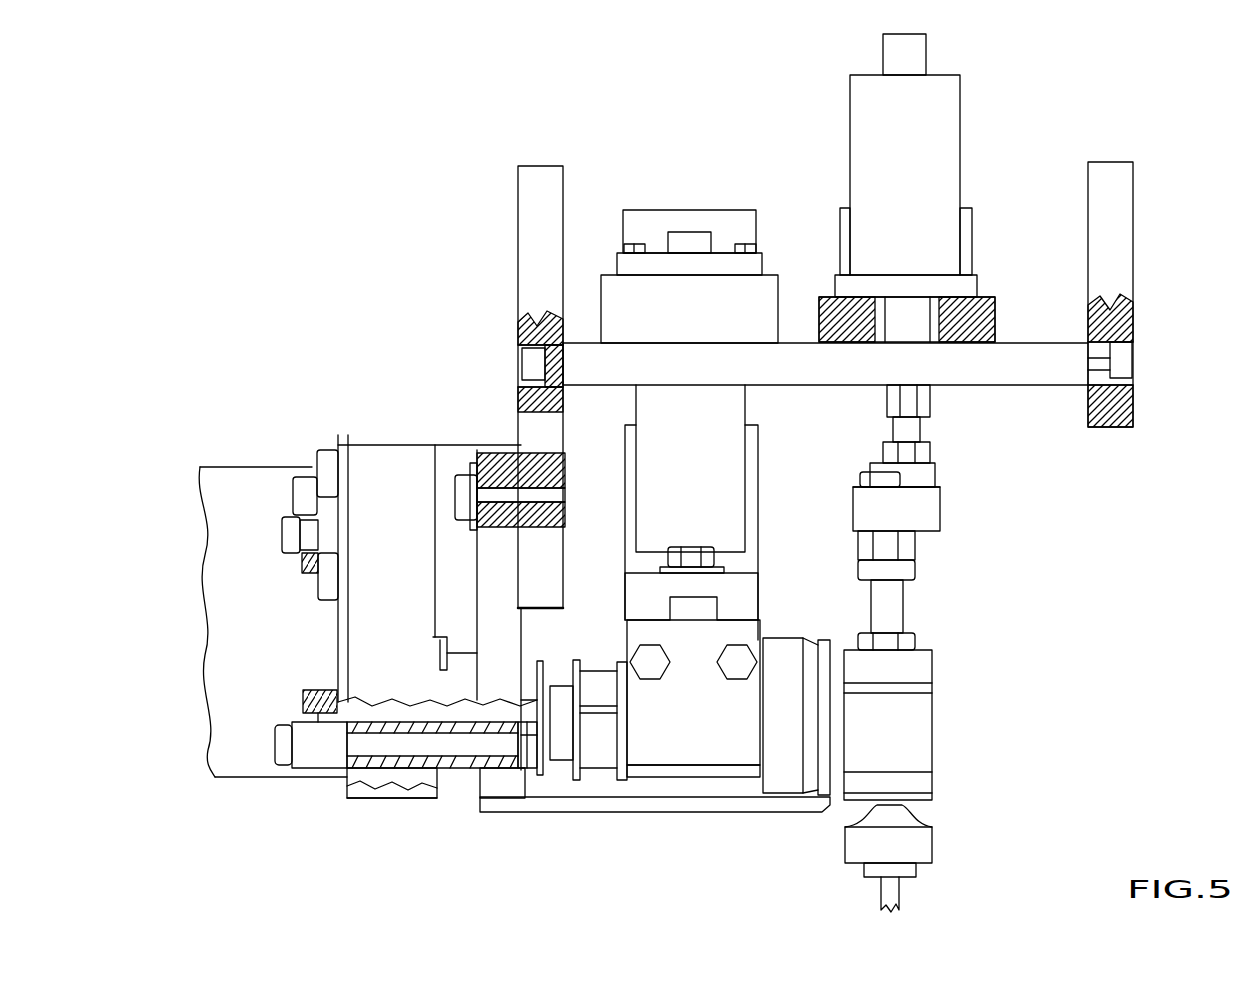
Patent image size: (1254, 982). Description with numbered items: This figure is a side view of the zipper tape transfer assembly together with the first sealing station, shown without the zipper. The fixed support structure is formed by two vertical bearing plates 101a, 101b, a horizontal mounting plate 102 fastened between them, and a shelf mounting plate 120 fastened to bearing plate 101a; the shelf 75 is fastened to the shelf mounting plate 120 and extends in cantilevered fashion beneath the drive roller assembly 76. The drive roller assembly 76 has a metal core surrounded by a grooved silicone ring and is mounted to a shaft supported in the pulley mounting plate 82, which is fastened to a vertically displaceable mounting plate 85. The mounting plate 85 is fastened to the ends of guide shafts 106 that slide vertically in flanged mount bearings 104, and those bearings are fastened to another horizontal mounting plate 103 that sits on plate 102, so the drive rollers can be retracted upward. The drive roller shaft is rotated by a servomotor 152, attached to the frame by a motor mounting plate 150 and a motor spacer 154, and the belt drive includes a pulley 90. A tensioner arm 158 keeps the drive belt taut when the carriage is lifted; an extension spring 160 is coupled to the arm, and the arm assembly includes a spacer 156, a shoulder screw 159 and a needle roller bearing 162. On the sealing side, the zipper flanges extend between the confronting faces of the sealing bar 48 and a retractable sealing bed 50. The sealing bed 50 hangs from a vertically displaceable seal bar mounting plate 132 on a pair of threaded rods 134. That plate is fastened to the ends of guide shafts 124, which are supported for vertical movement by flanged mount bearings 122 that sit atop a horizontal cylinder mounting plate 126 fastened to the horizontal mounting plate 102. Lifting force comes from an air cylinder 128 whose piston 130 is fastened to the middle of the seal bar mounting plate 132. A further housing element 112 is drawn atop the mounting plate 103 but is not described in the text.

The sealing bar 48 is at (933, 840).
The sealing bed 50 is at (933, 780).
The shelf 75 is at (683, 812).
The drive roller assembly 76 is at (823, 640).
The pulley mounting plate 82 is at (740, 632).
The mounting plate 85 is at (740, 582).
The pulley 90 is at (570, 672).
The bearing plate 101a is at (518, 242).
The bearing plate 101b is at (1133, 268).
The horizontal mounting plate 102 is at (805, 343).
The horizontal mounting plate 103 is at (600, 292).
The flanged mount bearings 104 is at (740, 403).
The guide shafts 106 is at (690, 235).
The actuator housing 112 is at (645, 210).
The shelf mounting plate 120 is at (487, 786).
The flanged mount bearings 122 is at (960, 130).
The guide shafts 124 is at (927, 58).
The horizontal cylinder mounting plate 126 is at (995, 320).
The air cylinder 128 is at (972, 211).
The piston 130 is at (915, 433).
The seal bar mounting plate 132 is at (925, 510).
The threaded rods 134 is at (895, 606).
The motor mounting plate 150 is at (398, 800).
The servomotor 152 is at (245, 780).
The motor spacer 154 is at (455, 456).
The spacer 156 is at (366, 772).
The tensioner arm 158 is at (305, 752).
The shoulder screw 159 is at (430, 745).
The extension spring 160 is at (303, 707).
The needle roller bearing 162 is at (500, 770).